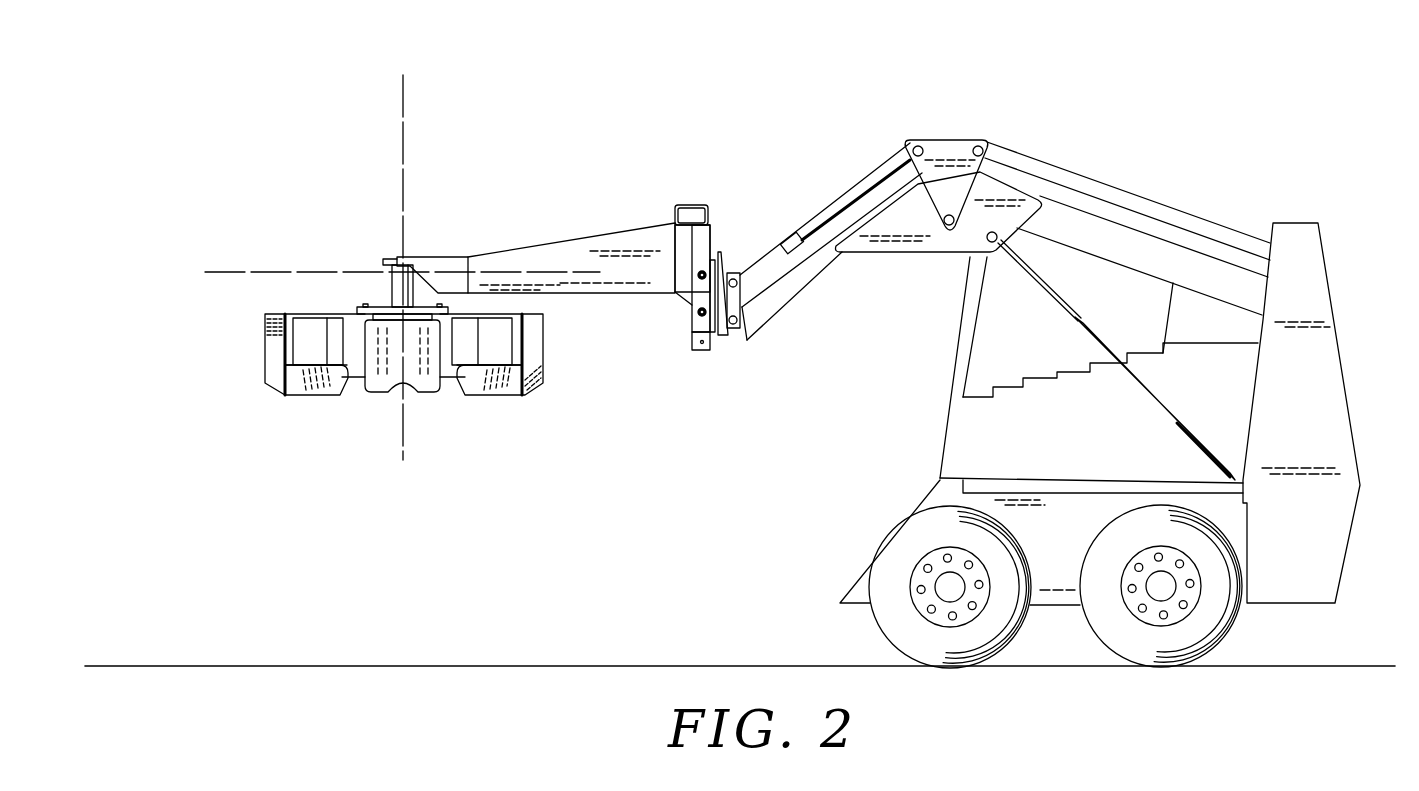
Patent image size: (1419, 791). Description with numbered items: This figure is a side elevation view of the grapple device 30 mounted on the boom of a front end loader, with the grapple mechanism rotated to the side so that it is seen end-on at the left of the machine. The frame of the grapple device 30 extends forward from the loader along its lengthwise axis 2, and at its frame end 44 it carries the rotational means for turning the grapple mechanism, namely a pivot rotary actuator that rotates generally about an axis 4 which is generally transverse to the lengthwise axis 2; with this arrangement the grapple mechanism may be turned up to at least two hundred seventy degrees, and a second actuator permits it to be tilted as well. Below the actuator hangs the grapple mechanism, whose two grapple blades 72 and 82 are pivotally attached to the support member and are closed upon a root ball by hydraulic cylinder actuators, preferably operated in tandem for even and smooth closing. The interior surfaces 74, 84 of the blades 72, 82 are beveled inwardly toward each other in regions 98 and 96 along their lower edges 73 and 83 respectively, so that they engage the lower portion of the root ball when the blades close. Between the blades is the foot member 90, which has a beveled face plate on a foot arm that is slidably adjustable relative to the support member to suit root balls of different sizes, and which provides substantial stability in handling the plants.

The lengthwise axis 2 is at (272, 268).
The axis 4 is at (403, 125).
The grapple device 30 is at (541, 225).
The frame end 44 is at (413, 240).
The grapple blade 72 is at (262, 331).
The lower edge 73 is at (300, 397).
The interior surface 74 is at (307, 344).
The grapple blade 82 is at (530, 328).
The lower edge 83 is at (498, 396).
The interior surface 84 is at (503, 340).
The foot member 90 is at (417, 390).
The beveled region 96 is at (473, 392).
The beveled region 98 is at (325, 388).